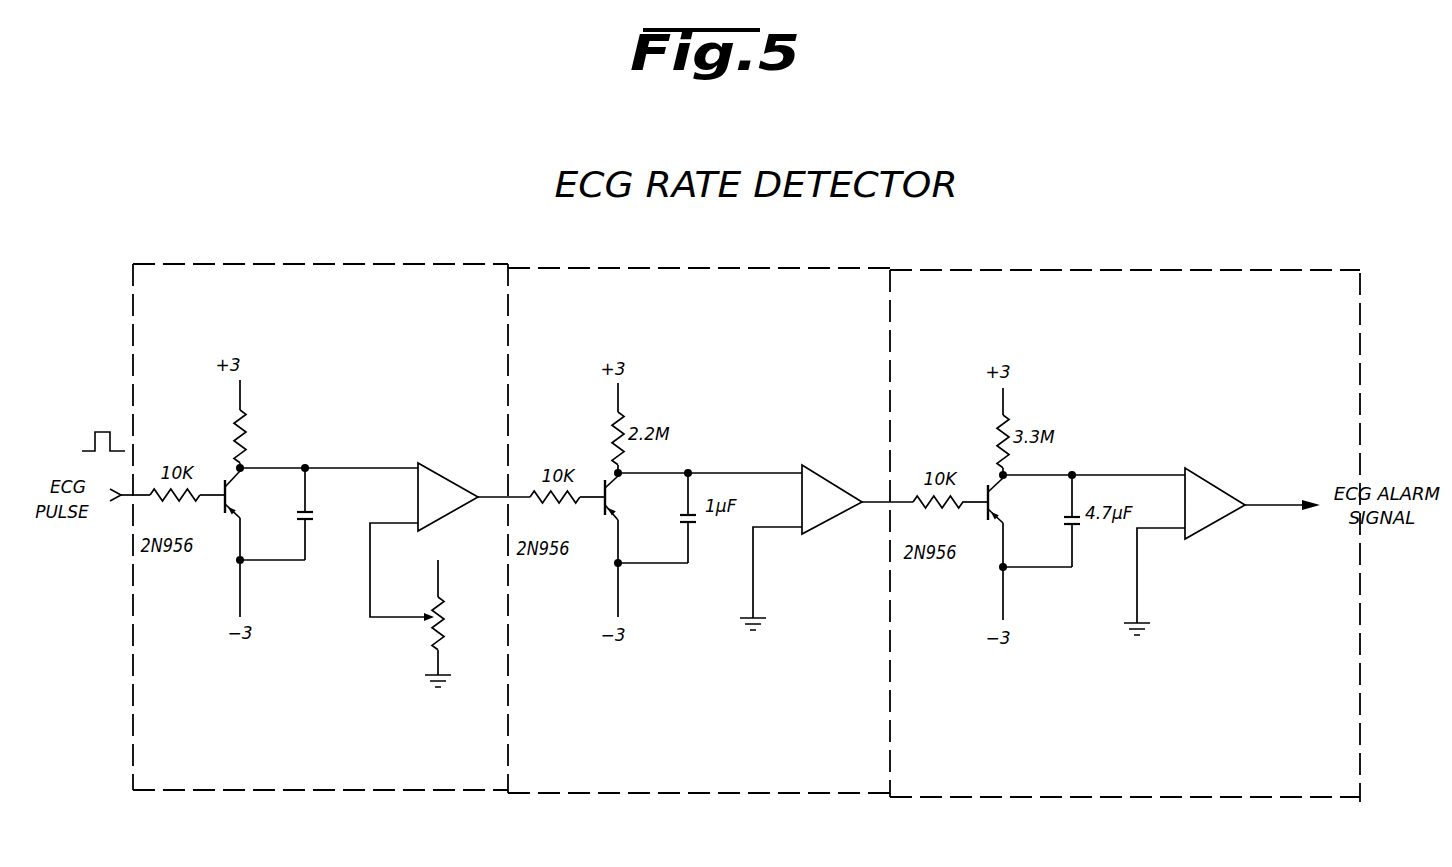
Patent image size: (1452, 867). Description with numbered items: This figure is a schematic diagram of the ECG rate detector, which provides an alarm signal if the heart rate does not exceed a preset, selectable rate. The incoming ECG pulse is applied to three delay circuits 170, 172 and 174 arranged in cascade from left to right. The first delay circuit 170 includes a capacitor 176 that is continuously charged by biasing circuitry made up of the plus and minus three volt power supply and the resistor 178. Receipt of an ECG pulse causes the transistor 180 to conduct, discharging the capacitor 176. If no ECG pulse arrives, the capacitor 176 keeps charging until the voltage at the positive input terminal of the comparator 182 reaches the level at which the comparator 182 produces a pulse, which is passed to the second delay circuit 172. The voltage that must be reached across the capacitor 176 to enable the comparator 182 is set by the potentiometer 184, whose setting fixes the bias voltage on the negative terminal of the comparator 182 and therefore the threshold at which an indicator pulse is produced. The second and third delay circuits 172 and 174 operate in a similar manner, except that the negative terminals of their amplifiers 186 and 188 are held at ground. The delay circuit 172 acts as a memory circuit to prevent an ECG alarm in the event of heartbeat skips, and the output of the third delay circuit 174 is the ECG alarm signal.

The first delay circuit 170 is at (372, 264).
The second delay circuit 172 is at (717, 268).
The third delay circuit 174 is at (1085, 272).
The capacitor 176 is at (310, 521).
The resistor 178 is at (235, 433).
The transistor 180 is at (237, 507).
The comparator 182 is at (428, 465).
The potentiometer 184 is at (430, 622).
The amplifier 186 is at (812, 470).
The amplifier 188 is at (1215, 487).